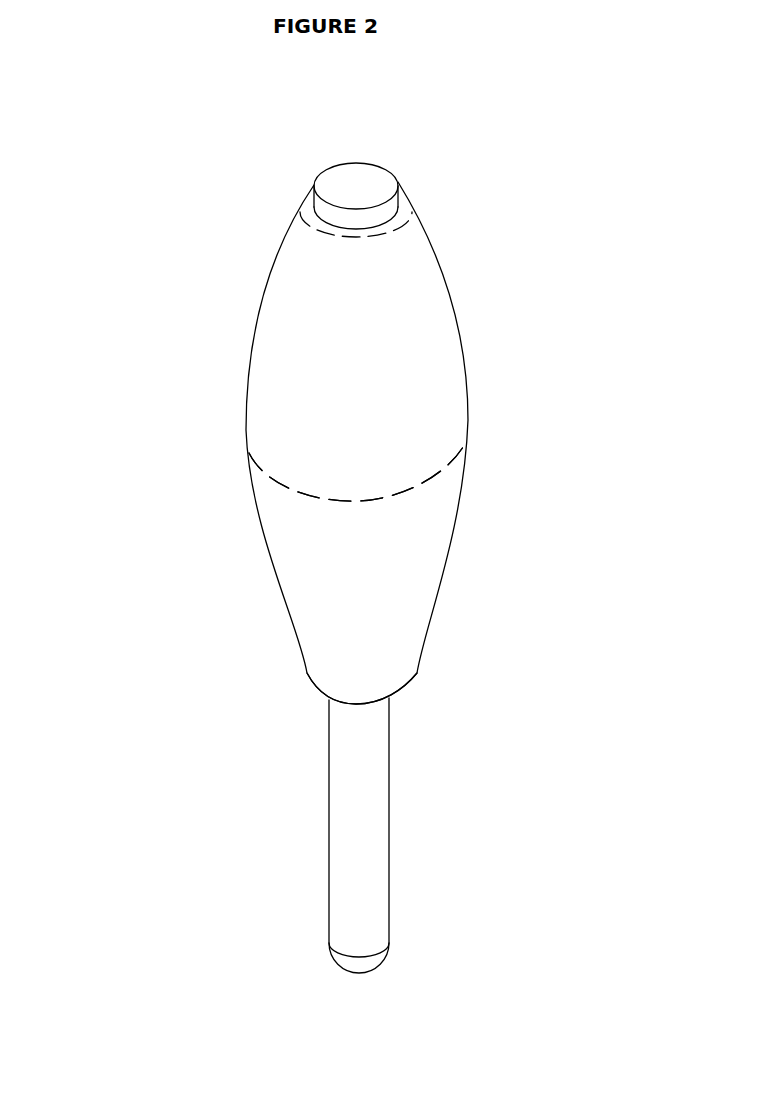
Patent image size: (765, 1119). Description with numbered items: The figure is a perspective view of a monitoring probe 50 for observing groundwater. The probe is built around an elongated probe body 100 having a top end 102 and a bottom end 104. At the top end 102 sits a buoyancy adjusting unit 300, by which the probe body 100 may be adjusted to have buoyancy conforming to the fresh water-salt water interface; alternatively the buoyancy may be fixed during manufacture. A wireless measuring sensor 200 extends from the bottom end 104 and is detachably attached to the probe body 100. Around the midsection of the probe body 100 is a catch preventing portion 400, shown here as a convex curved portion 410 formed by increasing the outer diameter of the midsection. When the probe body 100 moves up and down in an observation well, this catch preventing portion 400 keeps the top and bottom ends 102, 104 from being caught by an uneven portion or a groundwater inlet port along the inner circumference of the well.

The monitoring probe 50 is at (538, 267).
The probe body 100 is at (267, 295).
The top end of probe body 102 is at (408, 177).
The bottom end of probe body 104 is at (407, 700).
The wireless measuring sensor 200 is at (332, 802).
The buoyancy adjusting unit 300 is at (317, 180).
The catch preventing portion 400 is at (253, 470).
The convex curved portion 410 is at (247, 467).